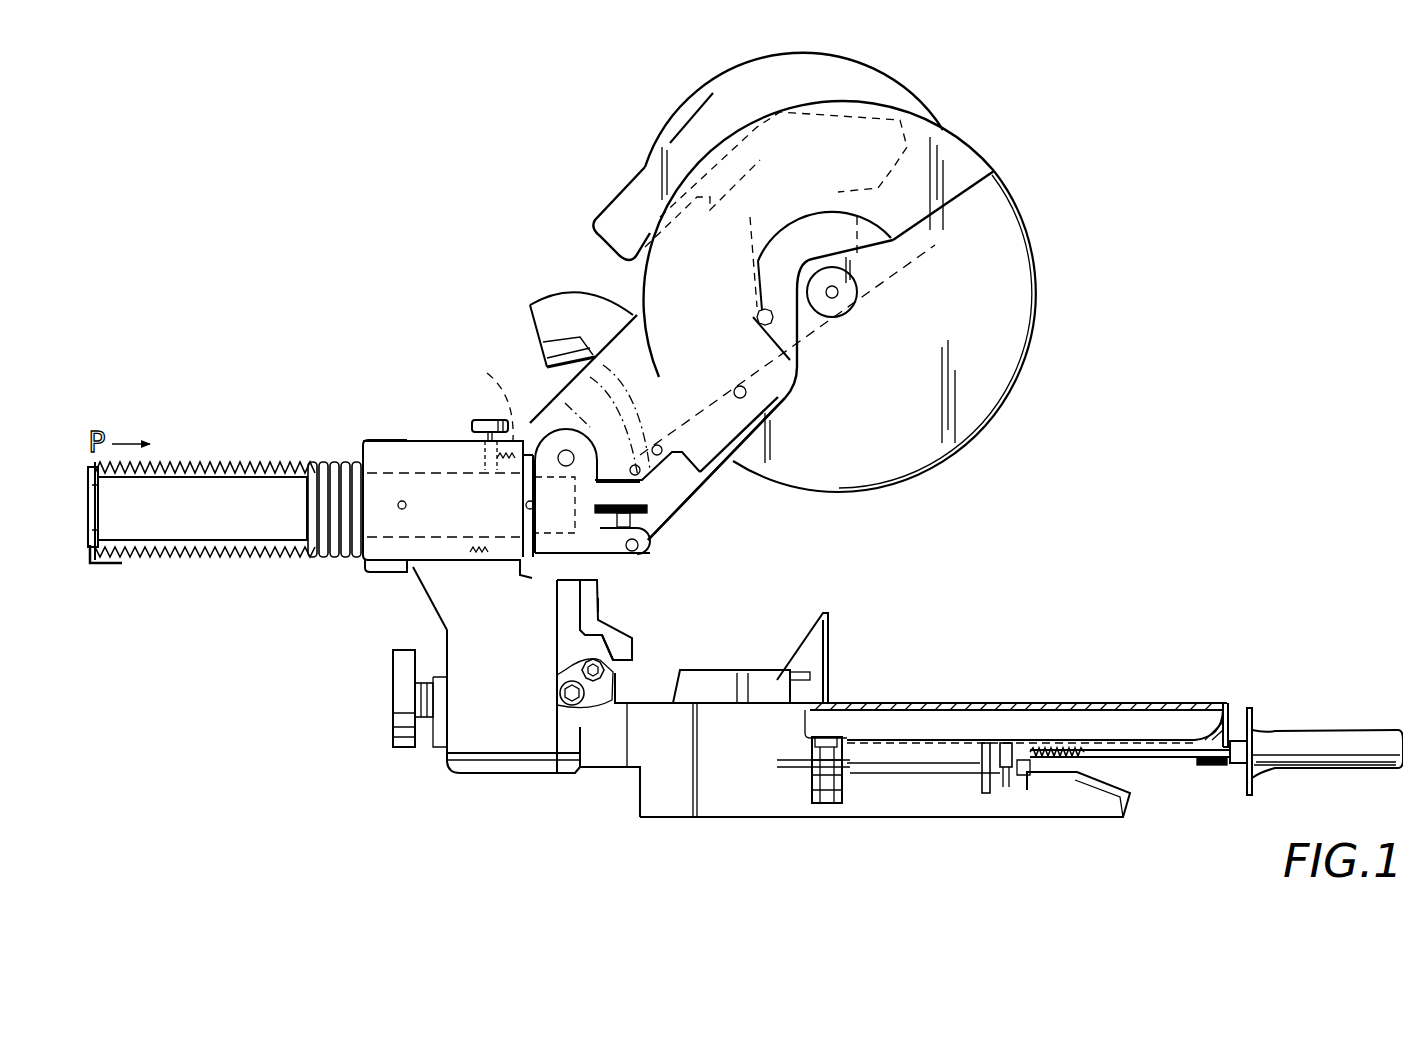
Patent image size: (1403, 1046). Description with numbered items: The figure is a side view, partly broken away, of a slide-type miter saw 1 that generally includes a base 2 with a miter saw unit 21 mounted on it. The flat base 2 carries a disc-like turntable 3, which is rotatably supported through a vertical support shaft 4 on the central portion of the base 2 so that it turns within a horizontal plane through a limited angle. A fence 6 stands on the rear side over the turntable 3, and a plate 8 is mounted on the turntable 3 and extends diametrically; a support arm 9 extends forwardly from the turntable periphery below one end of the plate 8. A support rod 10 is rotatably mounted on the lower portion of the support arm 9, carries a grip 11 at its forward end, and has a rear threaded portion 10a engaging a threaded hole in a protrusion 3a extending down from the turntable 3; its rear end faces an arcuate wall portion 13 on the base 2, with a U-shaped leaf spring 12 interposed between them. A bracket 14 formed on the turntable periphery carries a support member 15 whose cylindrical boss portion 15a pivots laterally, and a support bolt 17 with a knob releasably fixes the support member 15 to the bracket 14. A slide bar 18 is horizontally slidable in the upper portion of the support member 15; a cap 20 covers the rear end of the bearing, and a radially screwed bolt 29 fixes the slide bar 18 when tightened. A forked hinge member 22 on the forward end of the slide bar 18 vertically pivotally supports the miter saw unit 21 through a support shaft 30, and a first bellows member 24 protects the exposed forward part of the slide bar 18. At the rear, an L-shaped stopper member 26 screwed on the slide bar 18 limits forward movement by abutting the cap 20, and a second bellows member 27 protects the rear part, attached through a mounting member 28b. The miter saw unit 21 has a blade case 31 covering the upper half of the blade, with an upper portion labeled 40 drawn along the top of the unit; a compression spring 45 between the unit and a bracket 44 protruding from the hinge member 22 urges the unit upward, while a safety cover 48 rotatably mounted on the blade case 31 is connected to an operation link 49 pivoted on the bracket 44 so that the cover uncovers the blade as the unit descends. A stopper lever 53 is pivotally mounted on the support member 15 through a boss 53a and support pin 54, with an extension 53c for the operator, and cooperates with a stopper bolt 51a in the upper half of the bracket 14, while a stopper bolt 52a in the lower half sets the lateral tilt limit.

The slide-type miter saw 1 is at (643, 150).
The base 2 is at (1107, 797).
The turntable 3 is at (1128, 703).
The protrusion 3a is at (1053, 743).
The vertical support shaft 4 is at (823, 773).
The fence 6 is at (827, 643).
The plate 8 is at (1188, 703).
The support arm 9 is at (1230, 713).
The support rod 10 is at (1177, 763).
The threaded portion 10a is at (1040, 775).
The grip 11 is at (1310, 737).
The leaf spring 12 is at (1032, 775).
The wall portion 13 is at (1013, 743).
The bracket 14 is at (608, 747).
The support member 15 is at (473, 753).
The boss portion 15a is at (512, 773).
The support bolt 17 is at (428, 717).
The slide bar 18 is at (278, 480).
The cap 20 is at (383, 448).
The miter saw unit 21 is at (678, 268).
The hinge member 22 is at (553, 440).
The first bellows member 24 is at (505, 420).
The stopper member 26 is at (113, 565).
The second bellows member 27 is at (205, 460).
The mounting member 28b is at (105, 512).
The bolt 29 is at (478, 421).
The support shaft 30 is at (542, 303).
The blade case 31 is at (962, 155).
The blade guard 40 is at (712, 97).
The bracket 44 is at (658, 533).
The compression spring 45 is at (627, 352).
The safety cover 48 is at (1017, 243).
The operation link 49 is at (687, 488).
The stopper bolt 51a is at (613, 677).
The stopper bolt 52a is at (547, 700).
The stopper lever 53 is at (593, 587).
The boss 53a is at (557, 600).
The extension 53c is at (627, 640).
The support pin 54 is at (602, 605).